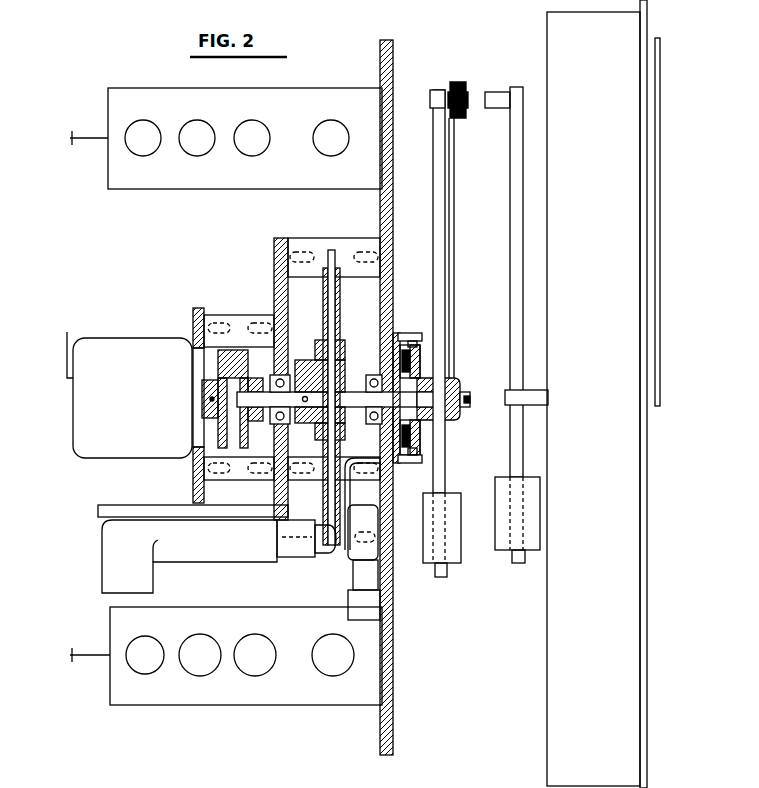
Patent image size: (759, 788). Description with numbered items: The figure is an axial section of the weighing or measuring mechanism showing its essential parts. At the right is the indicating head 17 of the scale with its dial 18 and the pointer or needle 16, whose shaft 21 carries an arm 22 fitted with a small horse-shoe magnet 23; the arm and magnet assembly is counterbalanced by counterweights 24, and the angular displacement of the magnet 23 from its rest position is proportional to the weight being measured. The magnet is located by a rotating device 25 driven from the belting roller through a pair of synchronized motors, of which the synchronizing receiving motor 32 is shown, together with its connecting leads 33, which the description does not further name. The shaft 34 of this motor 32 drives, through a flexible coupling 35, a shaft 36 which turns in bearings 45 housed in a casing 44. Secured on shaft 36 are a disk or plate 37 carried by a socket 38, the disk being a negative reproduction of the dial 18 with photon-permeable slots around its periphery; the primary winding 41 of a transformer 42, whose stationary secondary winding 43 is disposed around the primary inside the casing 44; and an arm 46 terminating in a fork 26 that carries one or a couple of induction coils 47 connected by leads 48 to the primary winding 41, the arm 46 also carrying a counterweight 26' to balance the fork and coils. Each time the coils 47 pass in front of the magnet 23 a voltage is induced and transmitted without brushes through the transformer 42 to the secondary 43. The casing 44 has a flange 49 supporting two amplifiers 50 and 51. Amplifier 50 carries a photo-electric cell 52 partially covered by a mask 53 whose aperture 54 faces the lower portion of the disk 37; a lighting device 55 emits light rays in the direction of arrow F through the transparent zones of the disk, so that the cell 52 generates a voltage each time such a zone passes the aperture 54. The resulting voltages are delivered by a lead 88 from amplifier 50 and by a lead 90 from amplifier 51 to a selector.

The pointer or needle 16 is at (657, 176).
The indicating head 17 is at (546, 25).
The dial 18 is at (647, 17).
The shaft 21 is at (518, 396).
The arm 22 is at (516, 204).
The horse-shoe magnet 23 is at (500, 92).
The counterweights 24 is at (511, 540).
The rotating device 25 is at (463, 378).
The fork 26 is at (444, 269).
The counterweight 26' is at (454, 545).
The synchronizing receiving motor 32 is at (131, 360).
The cable 33 is at (69, 346).
The shaft 34 is at (212, 397).
The flexible coupling 35 is at (235, 330).
The shaft 36 is at (353, 400).
The disk or plate 37 is at (332, 262).
The socket 38 is at (312, 372).
The primary winding 41 is at (418, 421).
The transformer 42 is at (420, 363).
The secondary winding 43 is at (406, 340).
The casing 44 is at (306, 236).
The bearings 45 is at (284, 426).
The arm 46 is at (440, 281).
The induction coils 47 is at (461, 82).
The leads 48 is at (454, 251).
The flange 49 is at (390, 215).
The amplifier 50 is at (240, 690).
The amplifier 51 is at (165, 108).
The photo-electric cell 52 is at (382, 591).
The mask 53 is at (352, 471).
The aperture 54 is at (343, 540).
The lighting device 55 is at (118, 553).
The lead 88 is at (92, 655).
The lead 90 is at (90, 138).
The arrow F is at (318, 572).